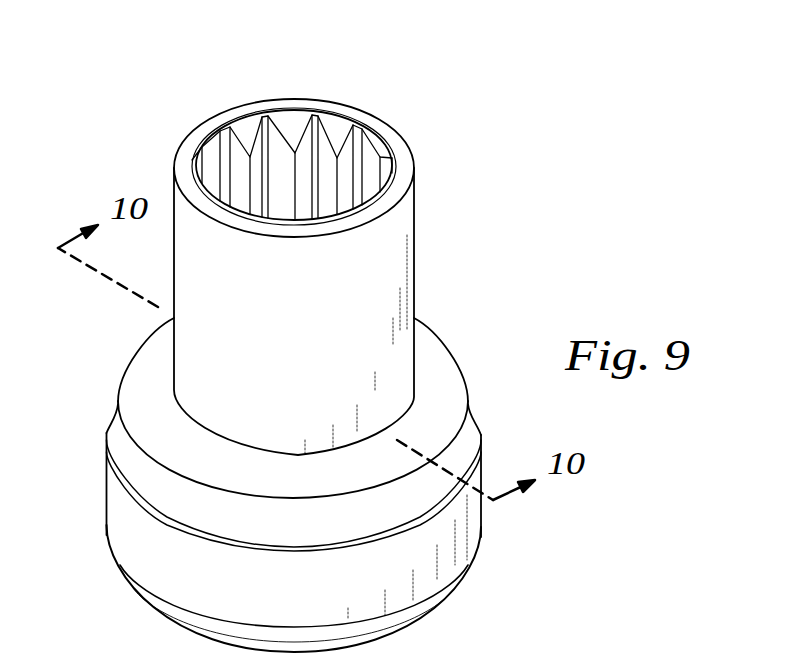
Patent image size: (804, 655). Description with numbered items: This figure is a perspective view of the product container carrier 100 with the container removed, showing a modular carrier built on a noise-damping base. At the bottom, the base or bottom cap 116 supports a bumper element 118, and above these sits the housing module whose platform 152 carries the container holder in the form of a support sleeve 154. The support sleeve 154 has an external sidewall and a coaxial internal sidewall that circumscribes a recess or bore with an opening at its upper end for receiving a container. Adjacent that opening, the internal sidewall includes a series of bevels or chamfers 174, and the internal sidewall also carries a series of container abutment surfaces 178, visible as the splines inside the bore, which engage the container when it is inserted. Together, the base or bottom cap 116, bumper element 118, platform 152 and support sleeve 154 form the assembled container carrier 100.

The product container carrier 100 is at (310, 328).
The base or bottom cap 116 is at (148, 592).
The bumper element 118 is at (122, 510).
The platform 152 is at (128, 445).
The support sleeve 154 is at (381, 298).
The bevels or chamfers 174 is at (638, 648).
The abutment surfaces 178 is at (324, 147).